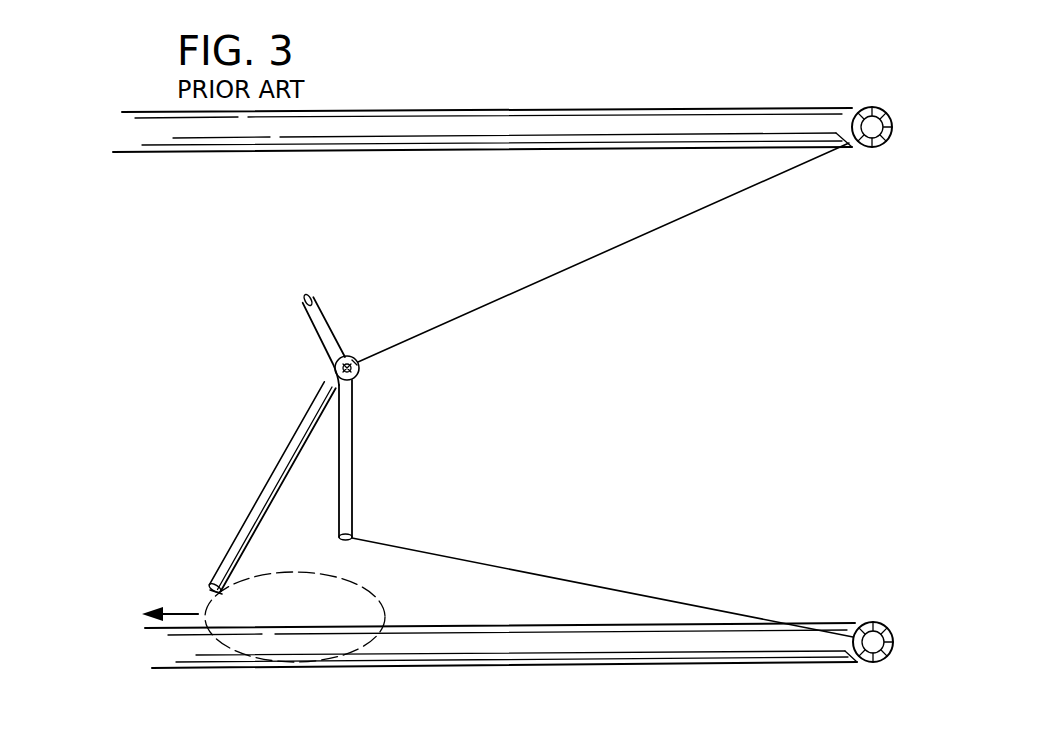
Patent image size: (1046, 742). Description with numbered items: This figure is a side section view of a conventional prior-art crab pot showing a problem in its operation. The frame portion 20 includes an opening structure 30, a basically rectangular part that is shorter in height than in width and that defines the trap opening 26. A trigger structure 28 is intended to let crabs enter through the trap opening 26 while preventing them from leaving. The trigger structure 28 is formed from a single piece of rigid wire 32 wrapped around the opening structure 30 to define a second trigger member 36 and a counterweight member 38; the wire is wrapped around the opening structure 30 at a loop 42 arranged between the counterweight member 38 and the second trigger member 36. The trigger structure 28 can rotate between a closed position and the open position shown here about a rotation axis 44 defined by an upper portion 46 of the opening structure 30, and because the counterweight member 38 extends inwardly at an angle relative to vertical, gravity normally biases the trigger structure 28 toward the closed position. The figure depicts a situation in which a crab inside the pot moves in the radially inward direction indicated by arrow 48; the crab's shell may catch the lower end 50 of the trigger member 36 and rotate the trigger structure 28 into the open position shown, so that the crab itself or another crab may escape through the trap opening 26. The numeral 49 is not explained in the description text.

The frame portion 20 is at (561, 105).
The trap opening 26 is at (407, 493).
The trigger structure 28 is at (229, 486).
The opening structure 30 is at (348, 450).
The rigid wire 32 is at (256, 486).
The second trigger member 36 is at (248, 472).
The counterweight member 38 is at (301, 328).
The loop 42 is at (392, 354).
The rotation axis 44 is at (349, 356).
The upper portion of the opening structure 46 is at (353, 384).
The arrow 48 is at (386, 603).
The direction of travel arrow 49 is at (183, 611).
The lower end of the trigger member 50 is at (216, 584).